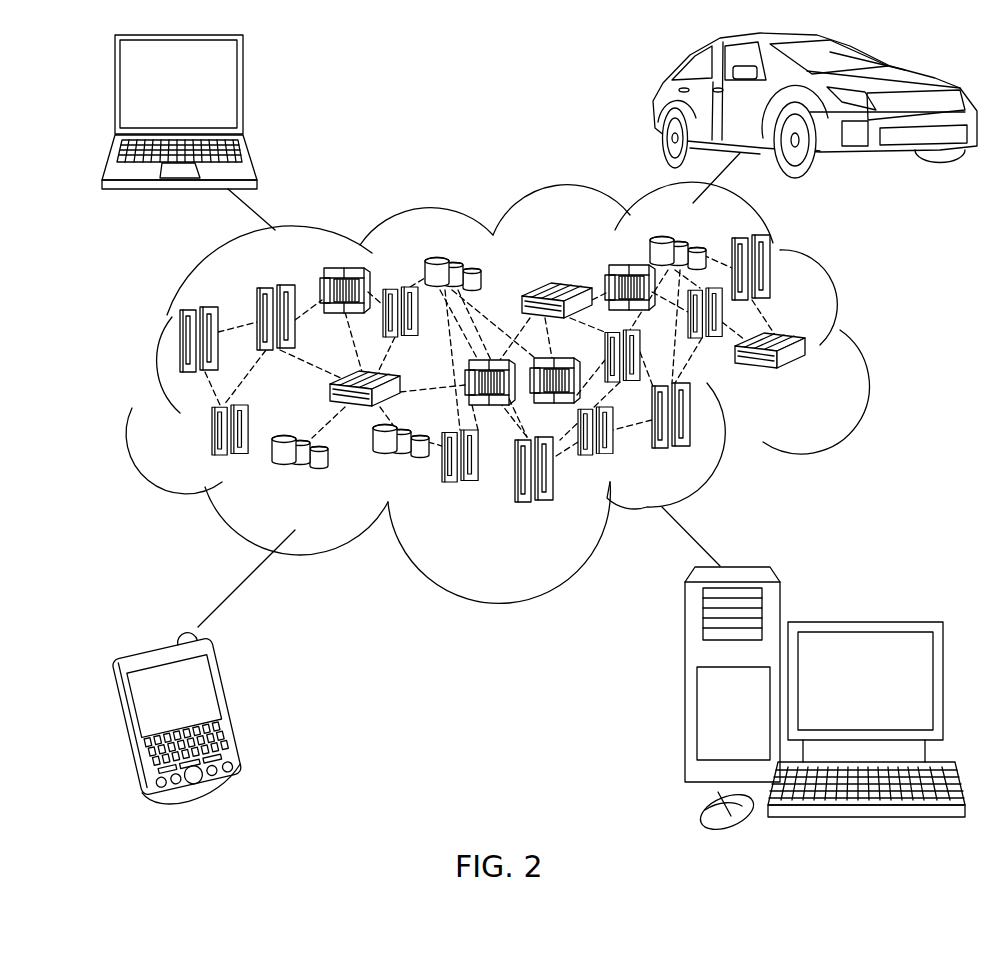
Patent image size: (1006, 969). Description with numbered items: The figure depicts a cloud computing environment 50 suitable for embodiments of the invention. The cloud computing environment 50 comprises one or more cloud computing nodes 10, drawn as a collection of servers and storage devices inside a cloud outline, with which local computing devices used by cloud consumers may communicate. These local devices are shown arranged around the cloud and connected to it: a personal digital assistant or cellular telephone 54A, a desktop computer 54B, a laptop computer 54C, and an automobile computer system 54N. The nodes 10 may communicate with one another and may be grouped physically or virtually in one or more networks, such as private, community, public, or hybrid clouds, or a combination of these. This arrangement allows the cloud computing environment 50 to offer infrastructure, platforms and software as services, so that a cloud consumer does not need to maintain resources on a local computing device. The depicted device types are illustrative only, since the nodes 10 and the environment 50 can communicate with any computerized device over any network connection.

The cloud computing node 10 is at (816, 379).
The cloud computing environment 50 is at (521, 404).
The personal digital assistant or cellular telephone 54A is at (237, 708).
The desktop computer 54B is at (862, 620).
The laptop computer 54C is at (244, 92).
The automobile computer system 54N is at (653, 105).